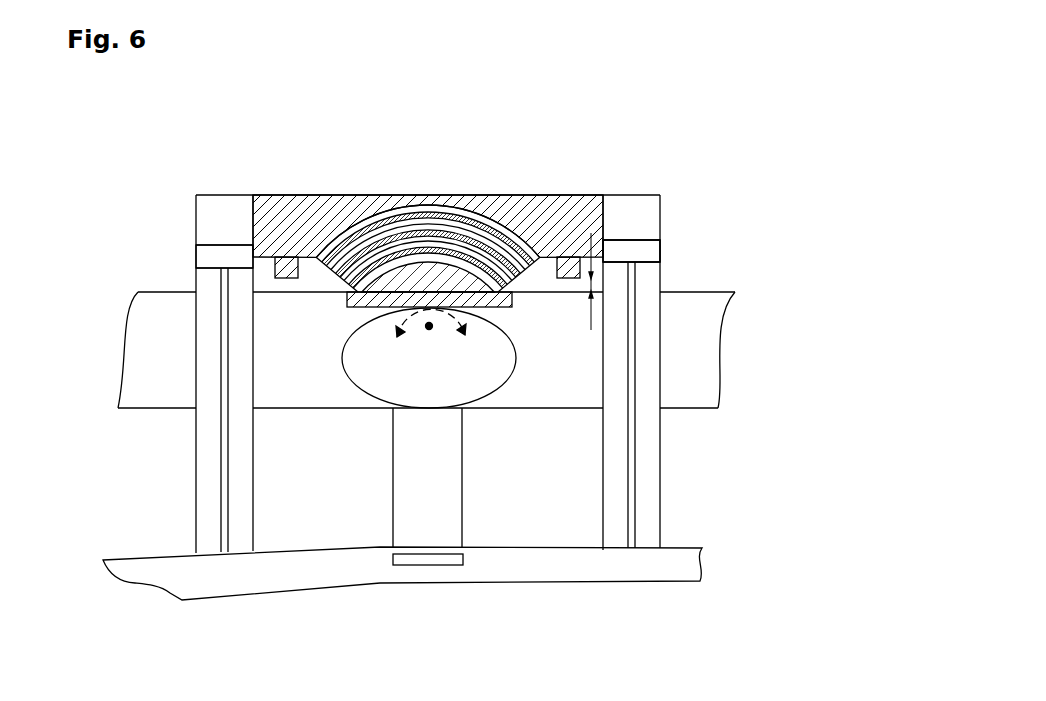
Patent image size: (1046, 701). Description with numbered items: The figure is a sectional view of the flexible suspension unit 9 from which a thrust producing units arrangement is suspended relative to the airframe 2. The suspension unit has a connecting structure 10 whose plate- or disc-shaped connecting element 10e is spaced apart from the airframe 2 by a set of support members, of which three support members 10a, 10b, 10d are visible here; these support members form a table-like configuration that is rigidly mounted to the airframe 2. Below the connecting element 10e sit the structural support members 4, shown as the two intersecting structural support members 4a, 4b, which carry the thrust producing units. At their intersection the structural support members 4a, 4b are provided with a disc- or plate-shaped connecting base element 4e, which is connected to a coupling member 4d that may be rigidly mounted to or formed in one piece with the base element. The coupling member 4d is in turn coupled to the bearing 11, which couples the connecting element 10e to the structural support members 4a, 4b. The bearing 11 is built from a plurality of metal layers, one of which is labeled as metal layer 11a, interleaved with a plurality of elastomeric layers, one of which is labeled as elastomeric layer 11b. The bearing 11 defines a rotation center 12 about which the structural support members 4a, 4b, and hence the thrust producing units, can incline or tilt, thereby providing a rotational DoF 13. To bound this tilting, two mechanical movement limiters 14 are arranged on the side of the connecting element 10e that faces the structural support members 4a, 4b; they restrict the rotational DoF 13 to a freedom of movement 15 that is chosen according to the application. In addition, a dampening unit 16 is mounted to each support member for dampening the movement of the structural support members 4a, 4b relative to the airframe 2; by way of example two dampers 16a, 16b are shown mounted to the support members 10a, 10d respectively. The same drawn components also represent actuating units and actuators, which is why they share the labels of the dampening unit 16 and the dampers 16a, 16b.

The airframe 2 is at (512, 558).
The structural support members 4 is at (692, 420).
The structural support member 4a is at (152, 390).
The structural support member 4b is at (692, 348).
The coupling member 4d is at (429, 262).
The connecting base element 4e is at (340, 300).
The flexible suspension unit 9 is at (173, 163).
The connecting structure 10 is at (628, 192).
The support member 10a is at (192, 318).
The support member 10b is at (392, 510).
The support member 10d is at (666, 276).
The connecting element 10e is at (375, 200).
The bearing 11 is at (330, 232).
The metal layer 11a is at (463, 200).
The elastomeric layer 11b is at (513, 230).
The rotation center 12 is at (421, 338).
The rotational DoF 13 is at (390, 323).
The mechanical movement limiter 14 is at (284, 257).
The freedom of movement 15 is at (592, 292).
The dampening unit 16 is at (640, 215).
The damper 16a is at (222, 240).
The damper 16b is at (648, 232).